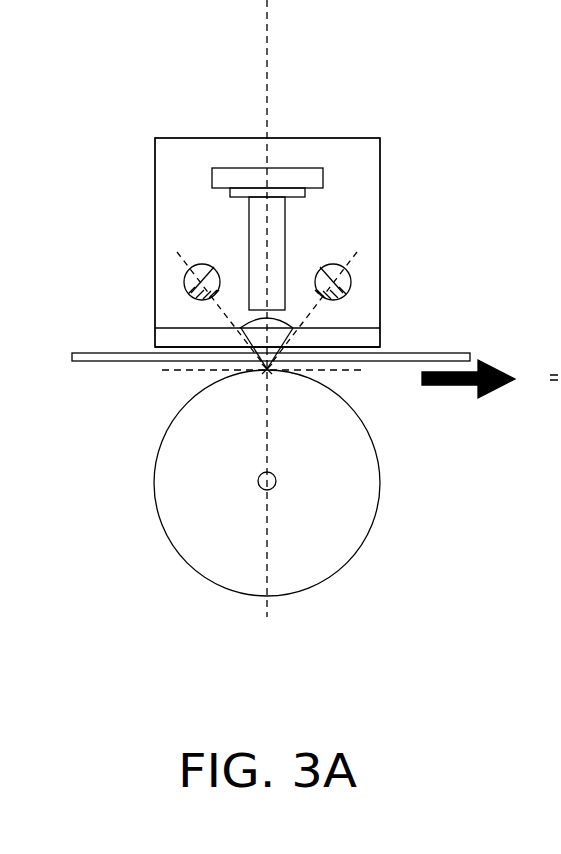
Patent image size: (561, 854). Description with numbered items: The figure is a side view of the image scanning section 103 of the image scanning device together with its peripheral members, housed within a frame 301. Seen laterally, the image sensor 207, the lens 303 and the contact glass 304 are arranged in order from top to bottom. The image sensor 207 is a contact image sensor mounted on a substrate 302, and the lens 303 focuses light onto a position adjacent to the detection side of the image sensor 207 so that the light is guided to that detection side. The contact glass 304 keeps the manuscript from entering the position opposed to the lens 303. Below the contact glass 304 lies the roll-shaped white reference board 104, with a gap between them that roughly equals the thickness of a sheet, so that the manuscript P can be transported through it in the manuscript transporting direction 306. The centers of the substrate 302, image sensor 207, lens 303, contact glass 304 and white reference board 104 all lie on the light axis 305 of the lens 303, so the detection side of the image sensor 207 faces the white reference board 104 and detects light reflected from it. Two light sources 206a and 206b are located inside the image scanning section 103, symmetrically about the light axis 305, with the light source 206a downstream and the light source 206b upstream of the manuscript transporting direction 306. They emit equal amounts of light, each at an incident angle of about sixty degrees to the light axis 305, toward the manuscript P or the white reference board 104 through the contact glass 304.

The image scanning section 103 is at (118, 158).
The white reference board 104 is at (365, 482).
The light source 206a is at (340, 282).
The light source 206b is at (190, 280).
The image sensor 207 is at (296, 187).
The frame 301 is at (182, 138).
The substrate 302 is at (225, 168).
The lens 303 is at (286, 238).
The contact glass 304 is at (368, 342).
The light axis 305 is at (270, 43).
The manuscript transporting direction 306 is at (452, 383).
The manuscript P is at (92, 362).